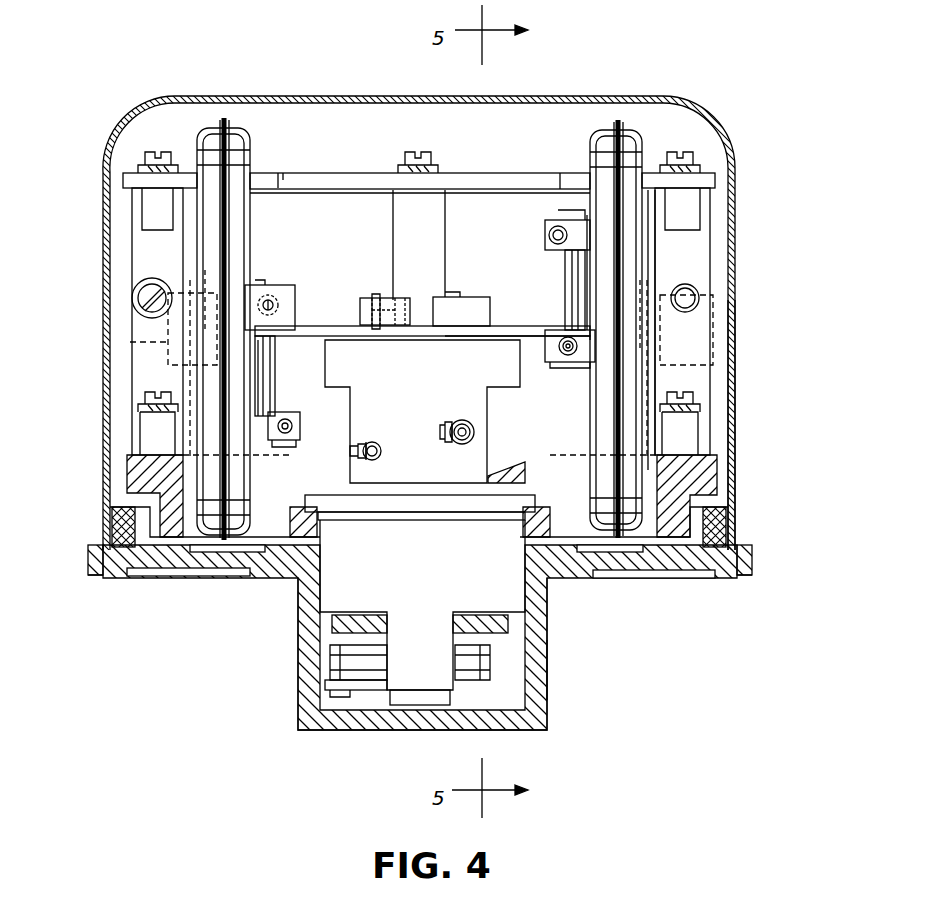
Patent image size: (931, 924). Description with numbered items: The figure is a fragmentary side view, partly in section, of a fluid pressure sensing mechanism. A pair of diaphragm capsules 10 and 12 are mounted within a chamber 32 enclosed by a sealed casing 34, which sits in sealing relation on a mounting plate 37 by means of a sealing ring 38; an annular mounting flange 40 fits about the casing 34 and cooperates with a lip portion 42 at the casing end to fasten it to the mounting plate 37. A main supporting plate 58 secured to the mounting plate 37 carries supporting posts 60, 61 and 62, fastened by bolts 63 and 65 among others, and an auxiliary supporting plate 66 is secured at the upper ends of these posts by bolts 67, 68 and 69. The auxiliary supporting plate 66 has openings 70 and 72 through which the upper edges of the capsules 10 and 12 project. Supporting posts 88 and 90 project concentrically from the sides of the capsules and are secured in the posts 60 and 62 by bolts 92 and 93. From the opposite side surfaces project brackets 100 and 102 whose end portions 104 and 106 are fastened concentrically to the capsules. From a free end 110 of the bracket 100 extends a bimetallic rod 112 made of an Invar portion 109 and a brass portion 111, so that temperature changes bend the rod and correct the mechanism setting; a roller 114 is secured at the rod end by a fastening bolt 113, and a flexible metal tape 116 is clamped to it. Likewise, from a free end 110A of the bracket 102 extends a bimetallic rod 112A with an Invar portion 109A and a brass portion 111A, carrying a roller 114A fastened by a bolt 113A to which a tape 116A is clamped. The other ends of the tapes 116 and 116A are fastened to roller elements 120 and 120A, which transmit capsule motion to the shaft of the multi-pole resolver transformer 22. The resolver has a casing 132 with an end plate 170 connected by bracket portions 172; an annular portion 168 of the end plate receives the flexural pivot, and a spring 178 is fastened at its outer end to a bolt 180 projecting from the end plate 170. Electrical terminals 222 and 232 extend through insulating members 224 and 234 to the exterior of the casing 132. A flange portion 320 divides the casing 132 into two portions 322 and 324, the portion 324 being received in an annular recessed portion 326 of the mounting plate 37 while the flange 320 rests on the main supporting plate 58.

The diaphragm capsule 10 is at (236, 126).
The diaphragm capsule 12 is at (608, 130).
The multi-pole resolver transformer 22 is at (437, 572).
The chamber 32 is at (373, 97).
The sealed casing 34 is at (737, 450).
The mounting plate 37 is at (187, 562).
The sealing ring 38 is at (733, 518).
The annular mounting flange 40 is at (86, 553).
The lip portion 42 is at (103, 570).
The main supporting plate 58 is at (537, 527).
The supporting post 60 is at (138, 372).
The supporting post 61 is at (400, 214).
The supporting post 62 is at (700, 368).
The bolt 63 is at (147, 403).
The bolt 65 is at (700, 402).
The auxiliary supporting plate 66 is at (470, 183).
The bolt 67 is at (146, 152).
The bolt 68 is at (418, 153).
The bolt 69 is at (690, 153).
The opening 70 is at (282, 176).
The opening 72 is at (553, 188).
The supporting post 88 is at (207, 307).
The supporting post 90 is at (653, 290).
The bolt 92 is at (140, 293).
The bolt 93 is at (690, 298).
The bracket 100 is at (230, 387).
The bracket 102 is at (633, 280).
The end portion 104 is at (178, 343).
The end portion 106 is at (660, 336).
The Invar portion 109 is at (262, 352).
The Invar portion 109A is at (568, 262).
The free end 110 is at (298, 421).
The free end 110A is at (556, 220).
The brass portion 111 is at (265, 371).
The brass portion 111A is at (580, 270).
The bimetallic rod 112 is at (272, 397).
The bimetallic rod 112A is at (565, 301).
The fastening bolt 113 is at (270, 303).
The bolt 113A is at (550, 233).
The roller 114 is at (292, 294).
The roller 114A is at (528, 361).
The flexible metal tape 116 is at (318, 327).
The flexible metal tape 116A is at (513, 330).
The roller element 120 is at (372, 297).
The roller element 120A is at (440, 322).
The casing 132 is at (432, 424).
The annular portion 168 is at (423, 695).
The end plate 170 is at (368, 688).
The bracket portions 172 is at (433, 673).
The spring 178 is at (488, 660).
The bolt 180 is at (337, 675).
The electrical terminal 222 is at (358, 452).
The electrical insulating member 224 is at (380, 456).
The electrical terminal 232 is at (480, 435).
The electrical insulating member 234 is at (464, 420).
The flange portion 320 is at (313, 495).
The casing portion 322 is at (522, 490).
The casing portion 324 is at (500, 593).
The annular recessed portion 326 is at (552, 660).